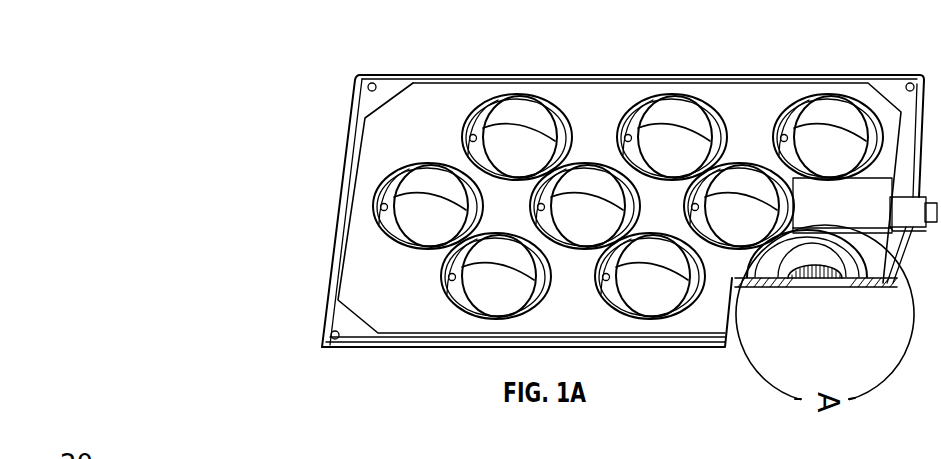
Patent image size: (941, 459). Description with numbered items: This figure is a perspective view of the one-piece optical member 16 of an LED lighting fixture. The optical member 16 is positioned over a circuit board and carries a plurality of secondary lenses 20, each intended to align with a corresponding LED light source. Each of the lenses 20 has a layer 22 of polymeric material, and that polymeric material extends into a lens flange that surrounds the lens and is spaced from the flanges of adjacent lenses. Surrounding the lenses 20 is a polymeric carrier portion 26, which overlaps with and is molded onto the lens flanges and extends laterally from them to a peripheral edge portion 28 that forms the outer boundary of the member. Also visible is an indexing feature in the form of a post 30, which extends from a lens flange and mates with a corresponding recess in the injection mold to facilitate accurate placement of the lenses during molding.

The one-piece optical member 16 is at (306, 168).
The secondary lens 20 is at (662, 295).
The layer of polymeric material 22 is at (478, 297).
The carrier portion 26 is at (397, 273).
The peripheral edge portion 28 is at (358, 213).
The post 30 is at (473, 134).